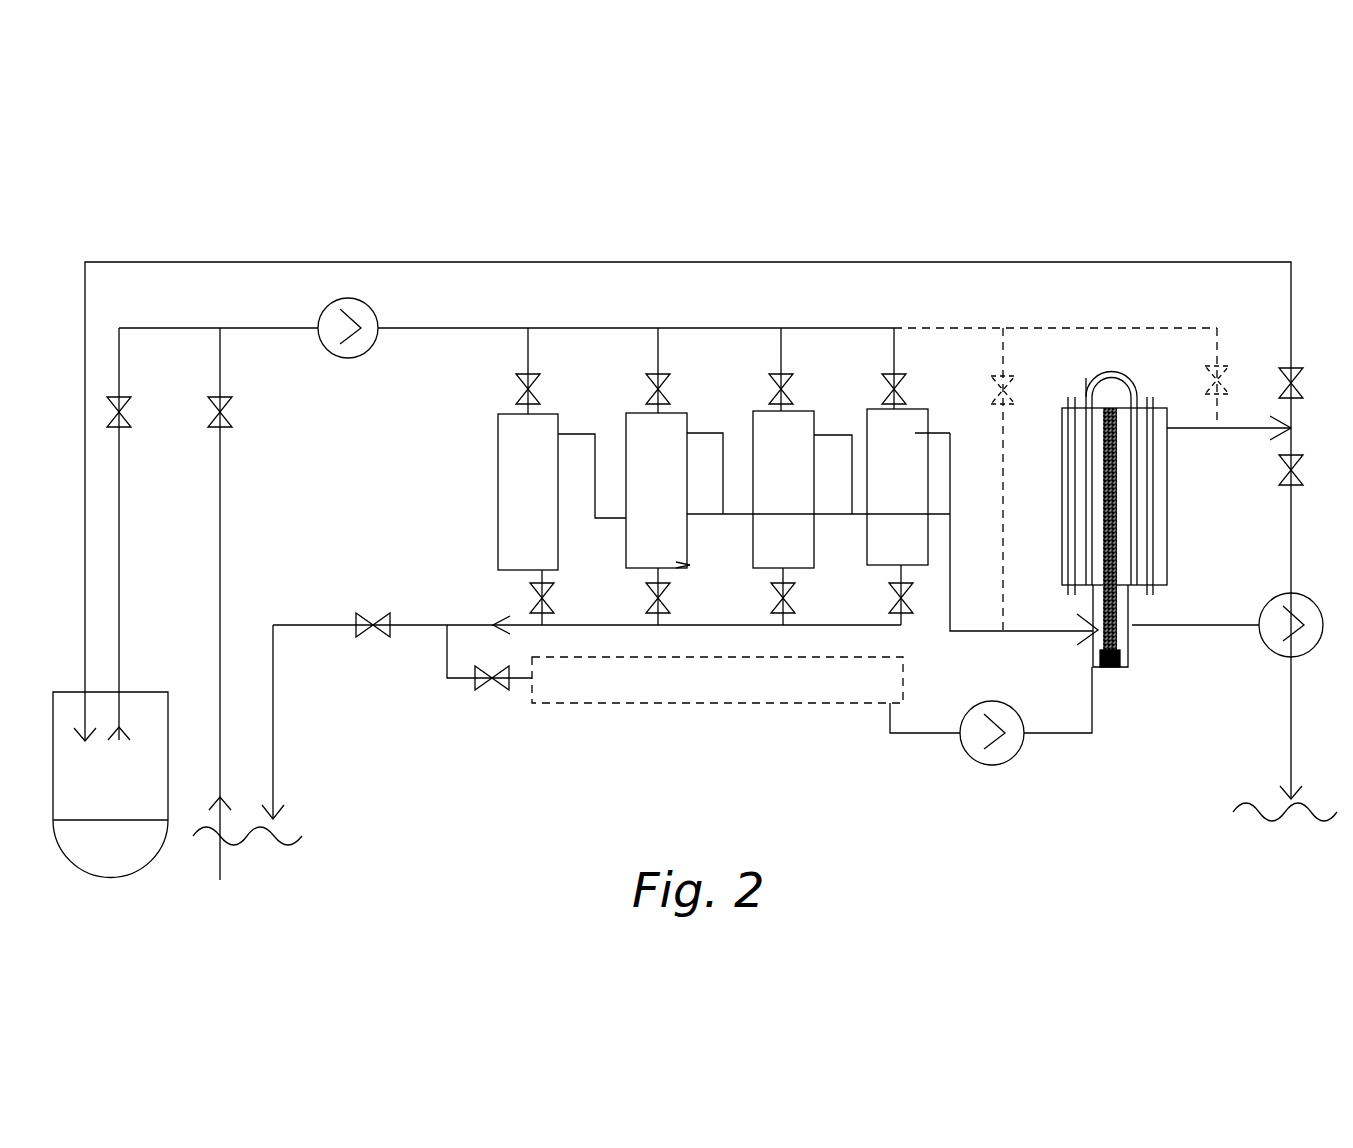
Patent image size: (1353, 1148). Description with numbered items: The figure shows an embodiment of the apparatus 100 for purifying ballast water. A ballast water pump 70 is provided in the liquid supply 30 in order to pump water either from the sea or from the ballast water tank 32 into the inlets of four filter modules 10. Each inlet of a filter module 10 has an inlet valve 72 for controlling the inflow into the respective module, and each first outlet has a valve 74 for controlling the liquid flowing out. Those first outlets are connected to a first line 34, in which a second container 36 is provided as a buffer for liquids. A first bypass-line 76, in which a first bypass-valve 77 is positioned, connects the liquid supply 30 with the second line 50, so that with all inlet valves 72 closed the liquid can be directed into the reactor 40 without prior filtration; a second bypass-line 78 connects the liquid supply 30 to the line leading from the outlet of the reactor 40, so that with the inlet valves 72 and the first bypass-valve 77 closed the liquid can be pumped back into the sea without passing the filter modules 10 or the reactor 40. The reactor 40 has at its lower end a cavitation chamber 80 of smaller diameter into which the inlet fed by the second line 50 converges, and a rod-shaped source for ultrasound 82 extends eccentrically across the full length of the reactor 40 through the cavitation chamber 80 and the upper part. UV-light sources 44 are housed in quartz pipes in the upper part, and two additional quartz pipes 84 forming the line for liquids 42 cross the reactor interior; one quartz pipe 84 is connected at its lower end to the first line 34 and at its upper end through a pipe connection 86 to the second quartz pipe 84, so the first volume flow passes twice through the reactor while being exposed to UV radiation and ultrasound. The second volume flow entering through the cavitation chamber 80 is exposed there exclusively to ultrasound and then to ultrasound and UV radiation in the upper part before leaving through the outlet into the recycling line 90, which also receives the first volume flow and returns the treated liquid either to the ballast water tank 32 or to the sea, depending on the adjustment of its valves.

The apparatus 100 is at (1212, 108).
The recycling line 90 is at (730, 256).
The liquid supply 30 is at (717, 327).
The ballast water pump 70 is at (390, 304).
The inlet valve 72 is at (518, 389).
The valve 74 is at (528, 598).
The filter module 10 is at (487, 497).
The second bypass-line 78 is at (1055, 354).
The pipe connection 86 is at (1143, 370).
The first bypass-line 76 is at (991, 479).
The first bypass-valve 77 is at (988, 391).
The line for liquids 42 is at (1080, 382).
The quartz pipe 84 is at (1085, 478).
The reactor 40 is at (1175, 505).
The UV-light source 44 is at (1072, 517).
The source for ultrasound 82 is at (1112, 615).
The cavitation chamber 80 is at (1140, 657).
The second line 50 is at (975, 636).
The ballast water tank 32 is at (120, 760).
The second container 36 is at (733, 713).
The first line 34 is at (908, 743).